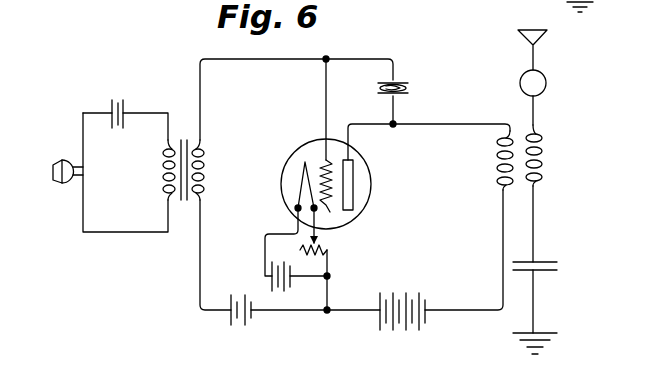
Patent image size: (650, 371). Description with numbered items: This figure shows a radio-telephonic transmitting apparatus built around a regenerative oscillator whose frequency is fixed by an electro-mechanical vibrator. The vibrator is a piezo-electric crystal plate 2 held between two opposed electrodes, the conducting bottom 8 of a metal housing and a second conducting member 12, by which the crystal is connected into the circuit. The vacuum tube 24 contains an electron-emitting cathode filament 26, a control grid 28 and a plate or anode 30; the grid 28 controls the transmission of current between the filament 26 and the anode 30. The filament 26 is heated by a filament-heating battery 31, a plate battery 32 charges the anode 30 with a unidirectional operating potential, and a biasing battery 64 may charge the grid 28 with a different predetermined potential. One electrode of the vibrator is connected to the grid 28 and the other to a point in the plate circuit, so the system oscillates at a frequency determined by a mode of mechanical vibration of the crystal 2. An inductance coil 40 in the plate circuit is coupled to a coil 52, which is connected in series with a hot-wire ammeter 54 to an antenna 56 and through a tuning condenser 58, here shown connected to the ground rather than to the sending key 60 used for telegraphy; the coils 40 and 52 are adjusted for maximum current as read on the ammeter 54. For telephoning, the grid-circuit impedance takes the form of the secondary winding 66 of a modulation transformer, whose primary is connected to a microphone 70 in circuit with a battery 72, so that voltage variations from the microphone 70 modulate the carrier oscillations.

The piezo-electric crystal plate 2 is at (407, 88).
The bottom of housing 8 is at (385, 93).
The second conducting member 12 is at (400, 89).
The vacuum tube container 24 is at (311, 142).
The cathode filament 26 is at (297, 190).
The control grid 28 is at (330, 212).
The plate or anode 30 is at (356, 186).
The filament-heating battery 31 is at (284, 281).
The plate battery 32 is at (428, 296).
The inductance coil 40 is at (495, 154).
The coil 52 is at (545, 163).
The hot-wire ammeter 54 is at (548, 83).
The antenna 56 is at (517, 40).
The tuning condenser 58 is at (546, 261).
The sending key 60 is at (162, 181).
The biasing battery 64 is at (247, 319).
The secondary winding of modulation transformer 66 is at (181, 170).
The microphone 70 is at (64, 186).
The battery 72 is at (126, 101).